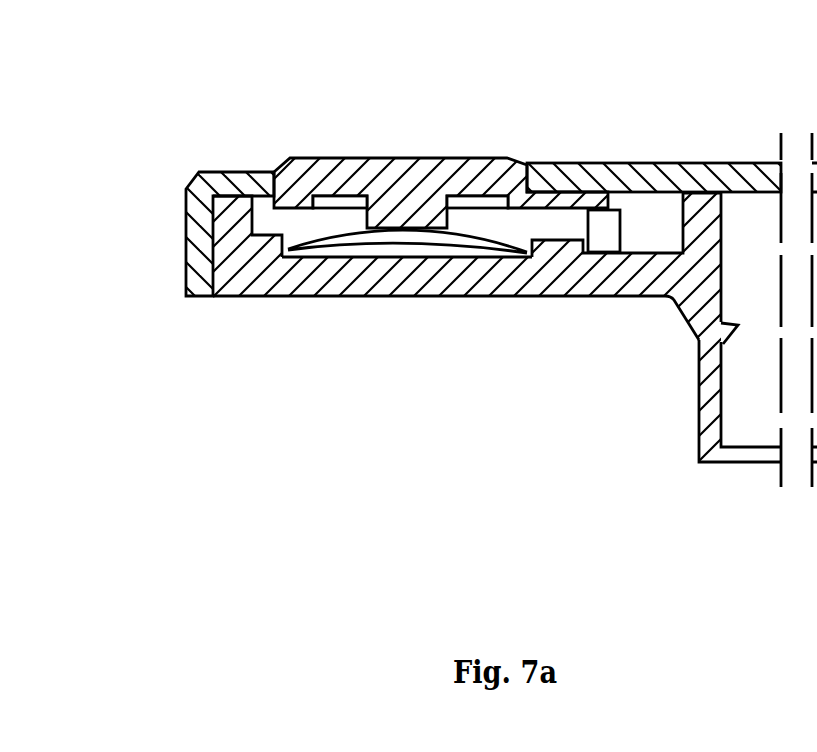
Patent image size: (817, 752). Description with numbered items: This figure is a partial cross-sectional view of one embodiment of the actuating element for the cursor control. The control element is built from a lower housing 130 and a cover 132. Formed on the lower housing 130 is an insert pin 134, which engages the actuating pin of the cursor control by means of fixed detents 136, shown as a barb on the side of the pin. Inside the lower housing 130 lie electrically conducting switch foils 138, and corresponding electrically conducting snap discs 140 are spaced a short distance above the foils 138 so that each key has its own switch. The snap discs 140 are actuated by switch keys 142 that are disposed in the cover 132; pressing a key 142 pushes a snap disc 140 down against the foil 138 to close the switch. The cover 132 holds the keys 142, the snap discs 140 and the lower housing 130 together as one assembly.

The lower housing 130 is at (640, 285).
The cover 132 is at (218, 178).
The insert pin 134 is at (708, 400).
The fixed detents 136 is at (728, 334).
The switch foils 138 is at (427, 256).
The snap discs 140 is at (397, 237).
The switch keys 142 is at (429, 174).